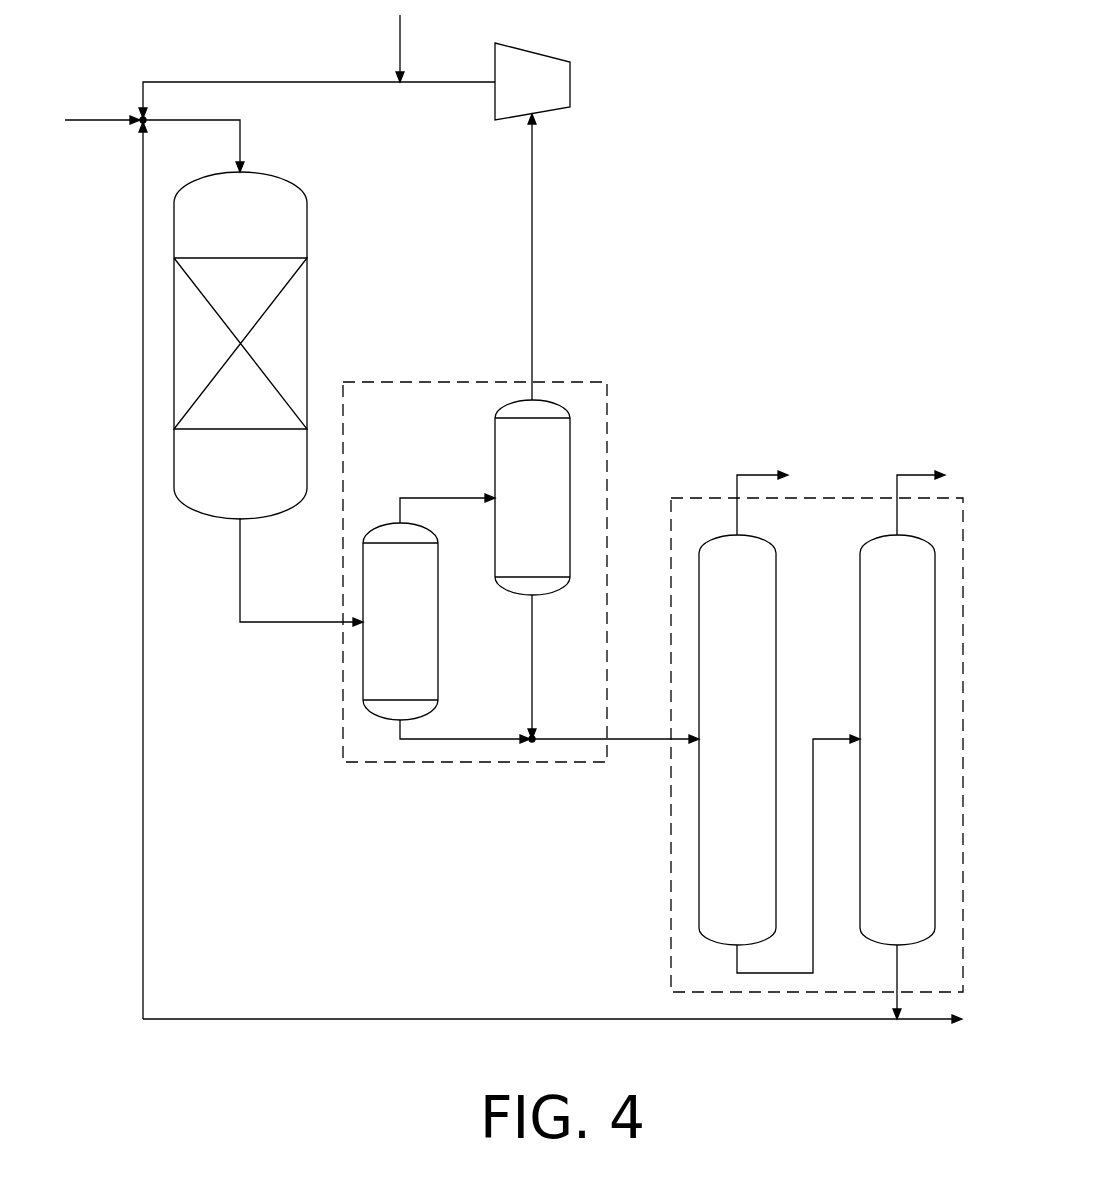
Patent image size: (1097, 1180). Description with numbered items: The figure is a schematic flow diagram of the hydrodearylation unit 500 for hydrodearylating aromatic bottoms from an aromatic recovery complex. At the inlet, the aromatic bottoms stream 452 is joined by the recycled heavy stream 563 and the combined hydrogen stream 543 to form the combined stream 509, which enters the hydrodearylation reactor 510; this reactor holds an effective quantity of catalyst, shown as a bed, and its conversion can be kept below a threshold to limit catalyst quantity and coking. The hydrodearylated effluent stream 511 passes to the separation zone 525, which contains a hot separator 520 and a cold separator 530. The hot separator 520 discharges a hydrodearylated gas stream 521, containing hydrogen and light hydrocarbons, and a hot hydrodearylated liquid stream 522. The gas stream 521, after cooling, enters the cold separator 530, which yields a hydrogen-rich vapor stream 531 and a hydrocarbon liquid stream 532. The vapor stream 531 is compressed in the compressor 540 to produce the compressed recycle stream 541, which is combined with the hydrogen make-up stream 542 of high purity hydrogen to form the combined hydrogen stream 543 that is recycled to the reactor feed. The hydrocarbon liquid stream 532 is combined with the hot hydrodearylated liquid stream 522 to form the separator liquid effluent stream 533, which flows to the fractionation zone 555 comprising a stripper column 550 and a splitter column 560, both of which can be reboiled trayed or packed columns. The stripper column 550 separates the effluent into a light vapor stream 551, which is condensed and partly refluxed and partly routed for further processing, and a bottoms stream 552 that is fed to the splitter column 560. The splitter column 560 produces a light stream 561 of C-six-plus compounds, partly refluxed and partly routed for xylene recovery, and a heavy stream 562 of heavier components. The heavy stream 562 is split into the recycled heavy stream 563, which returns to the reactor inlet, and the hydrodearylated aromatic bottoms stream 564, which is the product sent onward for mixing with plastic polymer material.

The aromatic bottoms stream 452 is at (128, 119).
The hydrodearylation unit 500 is at (803, 155).
The combined stream 509 is at (240, 127).
The hydrodearylation reactor 510 is at (221, 226).
The hydrodearylated effluent stream 511 is at (297, 622).
The hot separator 520 is at (381, 632).
The hydrodearylated gas stream 521 is at (441, 498).
The hot hydrodearylated liquid stream 522 is at (491, 739).
The separation zone 525 is at (358, 411).
The cold separator 530 is at (513, 509).
The vapor stream 531 is at (532, 262).
The hydrocarbon liquid stream 532 is at (532, 660).
The separator liquid effluent stream 533 is at (637, 739).
The compressor 540 is at (513, 94).
The compressed recycle stream 541 is at (443, 84).
The hydrogen make-up stream 542 is at (400, 30).
The combined hydrogen stream 543 is at (315, 82).
The stripper column 550 is at (718, 752).
The light vapor stream 551 is at (751, 475).
The bottoms stream 552 is at (736, 961).
The fractionation zone 555 is at (681, 526).
The splitter column 560 is at (878, 752).
The light stream 561 is at (916, 475).
The heavy stream 562 is at (898, 969).
The recycled heavy stream 563 is at (480, 1019).
The hydrodearylated aromatic bottoms stream 564 is at (930, 1021).